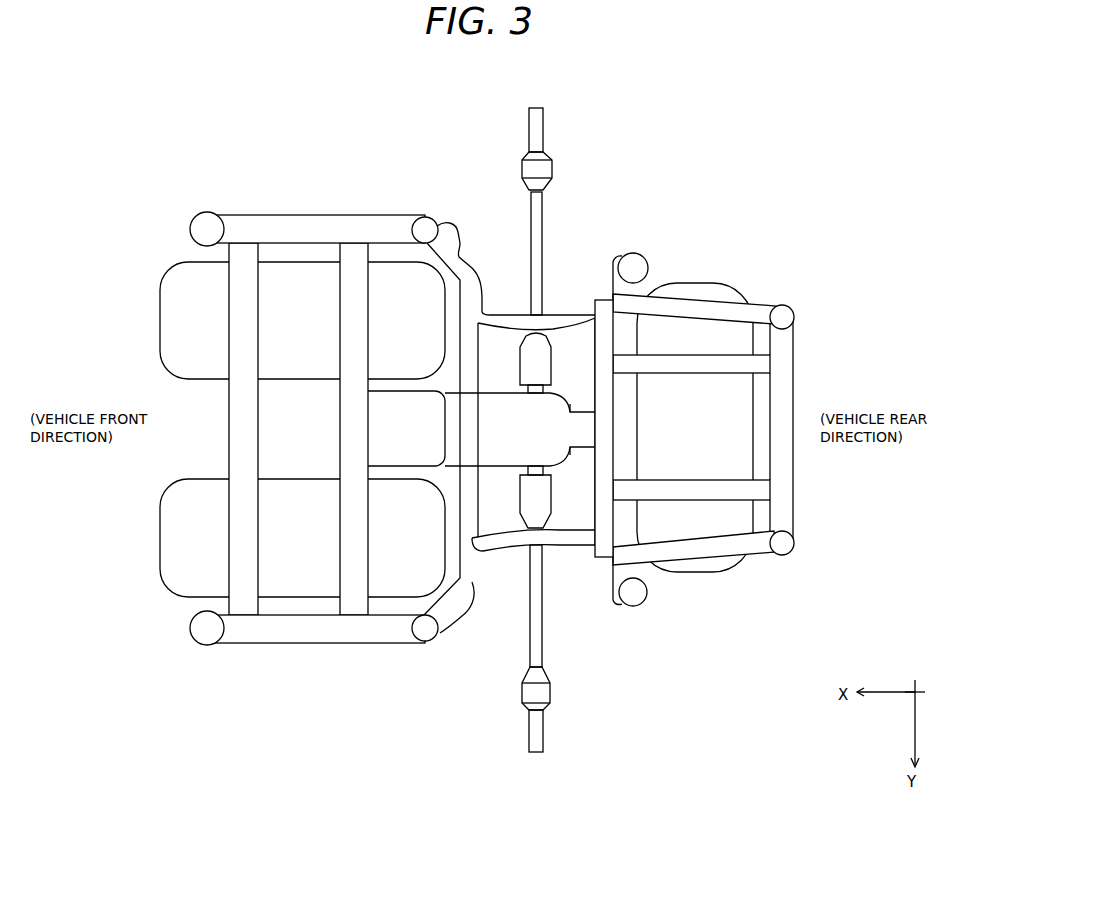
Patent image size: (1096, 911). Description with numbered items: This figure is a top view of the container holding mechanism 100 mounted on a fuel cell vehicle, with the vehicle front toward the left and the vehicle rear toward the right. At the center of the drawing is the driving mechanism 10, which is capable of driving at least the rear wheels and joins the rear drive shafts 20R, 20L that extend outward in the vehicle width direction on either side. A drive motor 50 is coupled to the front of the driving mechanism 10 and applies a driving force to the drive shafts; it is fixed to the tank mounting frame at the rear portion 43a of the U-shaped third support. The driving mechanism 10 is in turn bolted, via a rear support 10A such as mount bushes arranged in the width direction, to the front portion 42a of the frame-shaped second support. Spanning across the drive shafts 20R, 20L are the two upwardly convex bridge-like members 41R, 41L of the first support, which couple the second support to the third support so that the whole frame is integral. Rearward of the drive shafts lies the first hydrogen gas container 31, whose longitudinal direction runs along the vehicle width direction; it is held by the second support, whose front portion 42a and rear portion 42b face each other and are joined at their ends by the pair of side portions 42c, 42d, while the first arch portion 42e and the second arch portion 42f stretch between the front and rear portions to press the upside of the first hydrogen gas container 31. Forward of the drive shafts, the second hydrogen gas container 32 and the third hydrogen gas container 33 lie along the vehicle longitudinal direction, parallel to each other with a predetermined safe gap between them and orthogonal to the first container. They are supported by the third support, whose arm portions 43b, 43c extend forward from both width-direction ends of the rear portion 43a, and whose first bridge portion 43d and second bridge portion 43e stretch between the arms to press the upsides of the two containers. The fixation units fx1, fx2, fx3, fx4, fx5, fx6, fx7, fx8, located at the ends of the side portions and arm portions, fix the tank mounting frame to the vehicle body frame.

The container holding mechanism 100 is at (80, 97).
The driving mechanism 10 is at (502, 452).
The rear support 10A is at (593, 452).
The rear drive shaft 20R is at (522, 160).
The rear drive shaft 20L is at (530, 710).
The bridge-like member 41R is at (547, 330).
The bridge-like member 41L is at (552, 538).
The first hydrogen gas container 31 is at (748, 284).
The second hydrogen gas container 32 is at (172, 300).
The third hydrogen gas container 33 is at (172, 530).
The drive motor 50 is at (390, 448).
The rear portion 43a is at (479, 285).
The arm portion 43b is at (251, 222).
The arm portion 43c is at (257, 634).
The first bridge portion 43d is at (240, 410).
The second bridge portion 43e is at (350, 433).
The front portion 42a is at (605, 345).
The rear portion 42b is at (789, 403).
The side portion 42c is at (710, 311).
The side portion 42d is at (709, 551).
The first arch portion 42e is at (756, 495).
The second arch portion 42f is at (757, 366).
The fixation unit fx1 is at (792, 550).
The fixation unit fx2 is at (792, 311).
The fixation unit fx3 is at (643, 603).
The fixation unit fx4 is at (641, 257).
The fixation unit fx5 is at (419, 637).
The fixation unit fx6 is at (417, 222).
The fixation unit fx7 is at (196, 628).
The fixation unit fx8 is at (200, 219).